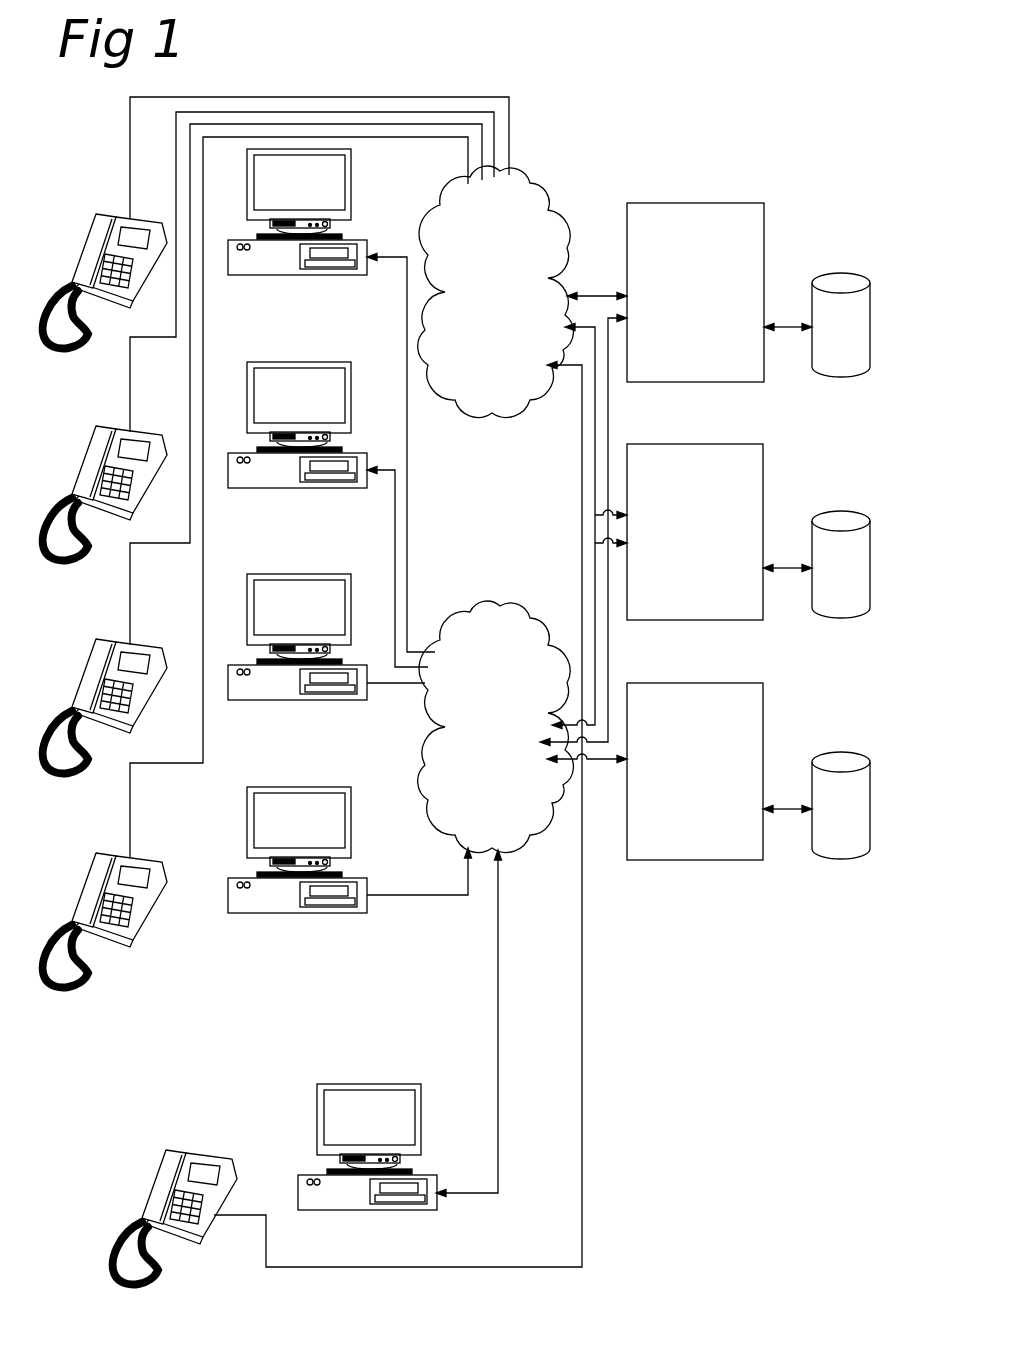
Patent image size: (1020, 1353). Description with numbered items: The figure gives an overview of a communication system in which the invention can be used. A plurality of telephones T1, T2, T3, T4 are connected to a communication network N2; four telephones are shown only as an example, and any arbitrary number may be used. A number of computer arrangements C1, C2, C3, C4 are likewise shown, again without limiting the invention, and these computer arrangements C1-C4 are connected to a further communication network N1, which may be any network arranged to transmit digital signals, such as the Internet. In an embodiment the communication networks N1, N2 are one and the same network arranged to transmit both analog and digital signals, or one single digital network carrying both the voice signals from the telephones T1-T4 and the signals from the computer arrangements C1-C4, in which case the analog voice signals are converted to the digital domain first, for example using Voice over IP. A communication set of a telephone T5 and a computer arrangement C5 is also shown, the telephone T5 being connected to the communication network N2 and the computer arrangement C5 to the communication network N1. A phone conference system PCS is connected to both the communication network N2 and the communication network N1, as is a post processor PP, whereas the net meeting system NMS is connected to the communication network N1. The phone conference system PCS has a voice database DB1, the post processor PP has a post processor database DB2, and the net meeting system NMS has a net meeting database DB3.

The telephone T1 is at (97, 241).
The telephone T2 is at (97, 453).
The telephone T3 is at (97, 666).
The telephone T4 is at (97, 880).
The telephone T5 is at (167, 1178).
The computer arrangement C1 is at (357, 247).
The computer arrangement C2 is at (357, 460).
The computer arrangement C3 is at (357, 672).
The computer arrangement C4 is at (356, 884).
The computer arrangement C5 is at (424, 1180).
The communication network N1 is at (502, 716).
The communication network N2 is at (518, 283).
The phone conference system PCS is at (688, 238).
The post processor PP is at (685, 460).
The net meeting system NMS is at (688, 705).
The voice database DB1 is at (841, 325).
The post processor database DB2 is at (841, 564).
The net meeting database DB3 is at (841, 805).